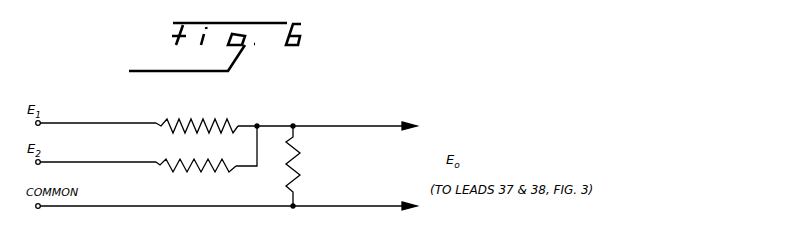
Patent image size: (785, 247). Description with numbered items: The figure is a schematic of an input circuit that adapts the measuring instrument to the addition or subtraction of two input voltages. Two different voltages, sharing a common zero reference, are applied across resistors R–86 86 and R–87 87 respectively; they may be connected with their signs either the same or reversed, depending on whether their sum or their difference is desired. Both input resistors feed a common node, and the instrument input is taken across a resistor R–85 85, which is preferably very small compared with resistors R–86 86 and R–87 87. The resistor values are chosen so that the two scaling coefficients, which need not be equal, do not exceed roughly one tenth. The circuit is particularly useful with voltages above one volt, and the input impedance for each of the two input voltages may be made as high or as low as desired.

The resistor R– 86 is at (197, 116).
The resistor R– 87 is at (196, 179).
The resistor R– 85 is at (311, 166).